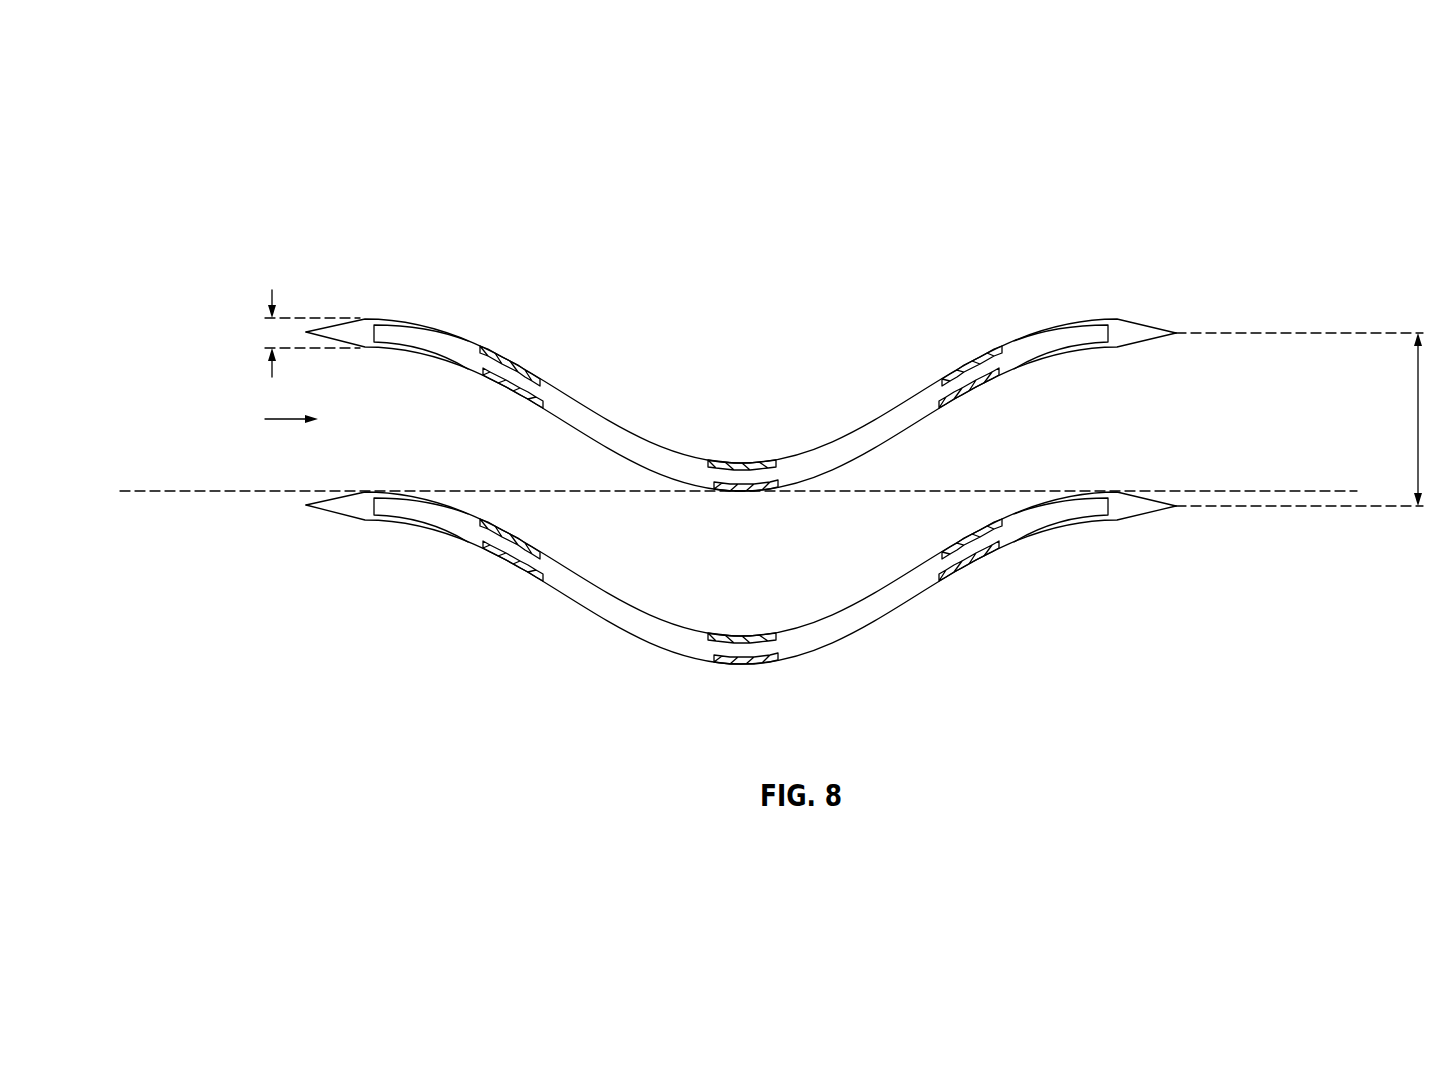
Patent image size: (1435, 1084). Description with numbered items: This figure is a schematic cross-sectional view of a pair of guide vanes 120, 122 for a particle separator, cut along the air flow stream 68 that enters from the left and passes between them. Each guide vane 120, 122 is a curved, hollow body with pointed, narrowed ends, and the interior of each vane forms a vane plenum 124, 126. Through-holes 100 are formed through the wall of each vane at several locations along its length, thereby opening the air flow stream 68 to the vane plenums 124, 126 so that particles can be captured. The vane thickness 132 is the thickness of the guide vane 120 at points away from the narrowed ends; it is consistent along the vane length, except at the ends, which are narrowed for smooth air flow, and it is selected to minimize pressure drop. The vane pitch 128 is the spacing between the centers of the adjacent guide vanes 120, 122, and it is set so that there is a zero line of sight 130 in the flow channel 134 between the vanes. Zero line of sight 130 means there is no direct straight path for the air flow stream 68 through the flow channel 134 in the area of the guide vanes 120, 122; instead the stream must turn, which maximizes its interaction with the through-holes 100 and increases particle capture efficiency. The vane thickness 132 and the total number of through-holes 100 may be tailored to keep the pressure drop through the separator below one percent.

The air flow stream 68 is at (290, 421).
The through-hole 100 is at (537, 377).
The guide vane 120 is at (741, 340).
The guide vane 122 is at (741, 610).
The vane plenum 124 is at (884, 430).
The vane plenum 126 is at (862, 612).
The vane pitch 128 is at (1418, 417).
The zero line of sight 130 is at (146, 492).
The vane thickness 132 is at (270, 298).
The flow channel 134 is at (503, 459).